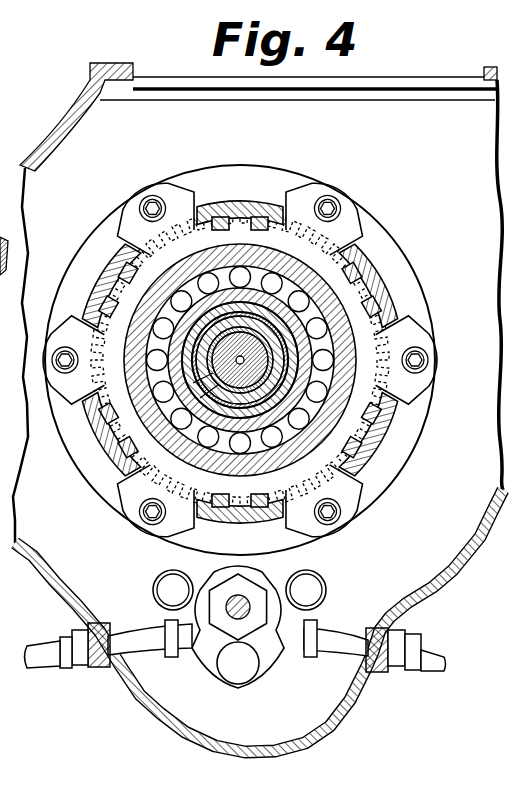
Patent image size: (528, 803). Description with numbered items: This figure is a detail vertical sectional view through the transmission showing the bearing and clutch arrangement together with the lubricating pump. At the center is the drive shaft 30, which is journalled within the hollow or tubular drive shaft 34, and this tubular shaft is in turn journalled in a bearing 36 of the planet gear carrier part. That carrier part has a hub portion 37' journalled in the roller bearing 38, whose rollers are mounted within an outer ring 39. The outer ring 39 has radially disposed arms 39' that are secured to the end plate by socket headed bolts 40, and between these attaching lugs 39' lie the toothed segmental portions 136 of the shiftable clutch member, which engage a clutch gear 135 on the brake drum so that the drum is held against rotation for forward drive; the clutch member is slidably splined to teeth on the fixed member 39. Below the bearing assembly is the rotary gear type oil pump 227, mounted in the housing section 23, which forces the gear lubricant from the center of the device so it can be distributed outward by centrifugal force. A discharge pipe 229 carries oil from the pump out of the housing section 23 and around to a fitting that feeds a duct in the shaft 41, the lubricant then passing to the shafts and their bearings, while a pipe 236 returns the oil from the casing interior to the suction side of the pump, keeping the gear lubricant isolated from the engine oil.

The housing section 23 is at (432, 583).
The drive shaft 30 is at (115, 424).
The tubular drive shaft 34 is at (185, 338).
The bearing 36 is at (128, 278).
The hub portion 37' is at (240, 252).
The roller bearing 38 is at (373, 402).
The outer ring 39 is at (387, 284).
The radially disposed arms 39' is at (337, 215).
The socket headed bolts 40 is at (336, 204).
The shaft 41 is at (240, 390).
The clutch gear 135 is at (338, 320).
The toothed segmental portions 136 is at (377, 440).
The rotary gear type oil pump 227 is at (212, 668).
The discharge pipe 229 is at (338, 632).
The pipe 236 is at (45, 672).